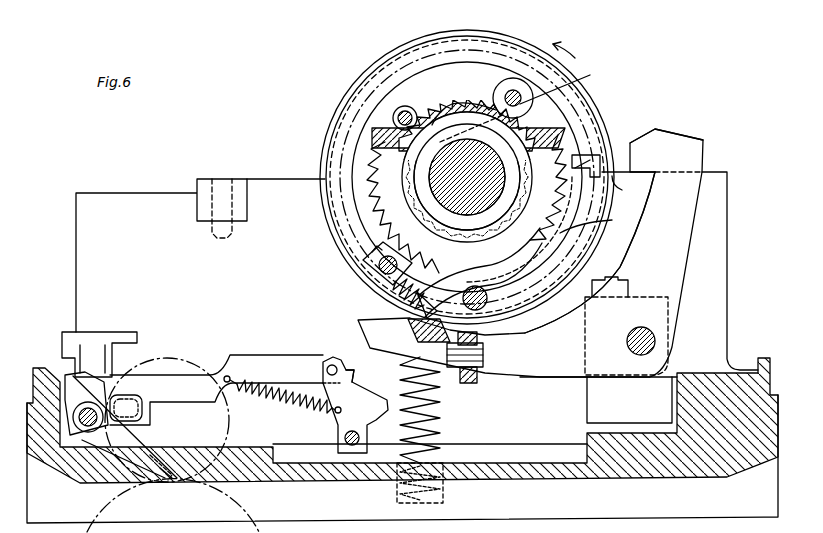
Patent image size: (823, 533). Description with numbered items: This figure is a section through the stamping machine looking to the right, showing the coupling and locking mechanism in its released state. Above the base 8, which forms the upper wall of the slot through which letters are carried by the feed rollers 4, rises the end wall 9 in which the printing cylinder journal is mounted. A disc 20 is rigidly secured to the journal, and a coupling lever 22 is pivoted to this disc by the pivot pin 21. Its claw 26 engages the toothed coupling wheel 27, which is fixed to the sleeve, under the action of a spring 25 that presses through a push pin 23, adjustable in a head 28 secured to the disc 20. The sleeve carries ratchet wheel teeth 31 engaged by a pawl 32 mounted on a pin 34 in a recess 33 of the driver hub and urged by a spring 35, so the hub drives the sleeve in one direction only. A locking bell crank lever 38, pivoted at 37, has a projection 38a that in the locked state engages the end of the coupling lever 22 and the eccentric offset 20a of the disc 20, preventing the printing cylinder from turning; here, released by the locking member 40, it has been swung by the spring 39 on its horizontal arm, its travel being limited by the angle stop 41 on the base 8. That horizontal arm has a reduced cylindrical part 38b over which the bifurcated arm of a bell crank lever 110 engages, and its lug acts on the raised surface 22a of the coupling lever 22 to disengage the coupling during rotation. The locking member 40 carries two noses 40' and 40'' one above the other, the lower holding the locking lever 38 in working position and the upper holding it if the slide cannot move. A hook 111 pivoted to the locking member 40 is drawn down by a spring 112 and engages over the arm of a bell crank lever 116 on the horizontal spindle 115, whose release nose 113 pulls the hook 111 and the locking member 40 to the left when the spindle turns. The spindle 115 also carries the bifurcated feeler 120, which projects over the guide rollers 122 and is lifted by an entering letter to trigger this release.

The feed rollers 4 is at (232, 490).
The base 8 is at (572, 462).
The end wall 9 is at (168, 200).
The disc 20 is at (632, 257).
The offset 20a is at (634, 186).
The pivot pin 21 is at (488, 297).
The coupling lever 22 is at (596, 152).
The raised surface 22a is at (600, 230).
The push pin 23 is at (460, 282).
The spring 25 is at (424, 275).
The claw 26 is at (548, 232).
The coupling wheel 27 is at (335, 182).
The head 28 is at (372, 266).
The ratchet wheel teeth 31 is at (505, 101).
The pawl 32 is at (452, 104).
The recess 33 is at (542, 130).
The pin 34 is at (564, 85).
The spring 35 is at (396, 112).
The pivot 37 is at (658, 341).
The locking bell crank lever 38 is at (680, 222).
The projection 38a is at (670, 135).
The reduced cylindrical part 38b is at (482, 363).
The spring 39 is at (440, 412).
The locking member 40 is at (355, 405).
The projection 40' is at (364, 367).
The projection 40'' is at (331, 356).
The angle stop 41 is at (432, 335).
The bell crank lever 110 is at (477, 382).
The hook 111 is at (210, 376).
The spring 112 is at (284, 398).
The release nose 113 is at (97, 342).
The spindle 115 is at (82, 428).
The bell crank lever 116 is at (126, 398).
The feeler 120 is at (158, 472).
The guide rollers 122 is at (230, 408).